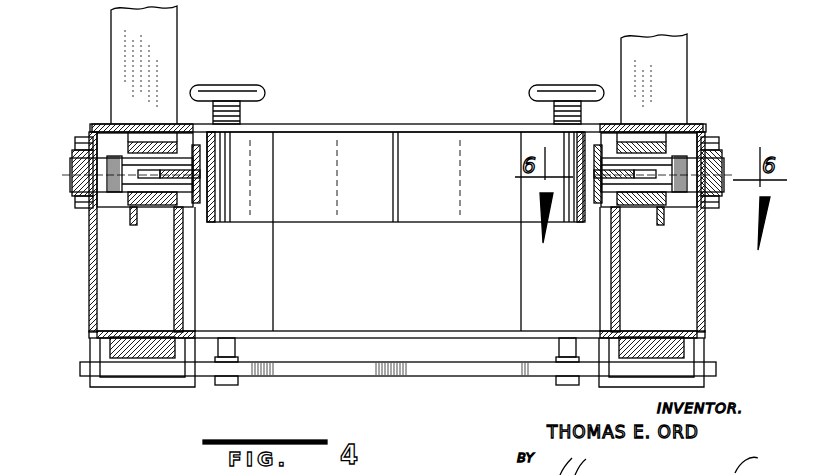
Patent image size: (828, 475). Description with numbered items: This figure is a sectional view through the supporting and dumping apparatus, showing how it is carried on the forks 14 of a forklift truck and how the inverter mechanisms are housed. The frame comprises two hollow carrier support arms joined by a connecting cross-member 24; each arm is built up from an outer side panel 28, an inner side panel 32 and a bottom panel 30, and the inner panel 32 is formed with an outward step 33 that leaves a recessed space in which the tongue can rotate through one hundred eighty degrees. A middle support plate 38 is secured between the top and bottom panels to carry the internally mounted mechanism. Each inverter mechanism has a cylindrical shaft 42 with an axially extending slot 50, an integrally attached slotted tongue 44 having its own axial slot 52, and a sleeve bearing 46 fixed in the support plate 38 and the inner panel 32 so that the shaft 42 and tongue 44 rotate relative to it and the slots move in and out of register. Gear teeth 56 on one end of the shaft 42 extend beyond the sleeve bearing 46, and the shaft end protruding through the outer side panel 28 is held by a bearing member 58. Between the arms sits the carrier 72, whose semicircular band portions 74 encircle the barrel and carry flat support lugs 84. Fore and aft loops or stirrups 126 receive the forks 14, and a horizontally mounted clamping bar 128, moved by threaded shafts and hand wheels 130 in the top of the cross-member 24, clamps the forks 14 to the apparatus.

The forks 14 is at (167, 43).
The connecting cross-member 24 is at (378, 126).
The outer side panel 28 is at (90, 281).
The bottom panel 30 is at (120, 331).
The inner side panel 32 is at (184, 276).
The outward step 33 is at (195, 302).
The middle support plate 38 is at (135, 212).
The cylindrical shaft 42 is at (120, 153).
The slotted tongue 44 is at (192, 143).
The sleeve bearing 46 is at (175, 207).
The axially extending slot 50 is at (148, 176).
The axially extending slot 52 is at (198, 178).
The gear teeth 56 is at (110, 193).
The bearing member 58 is at (83, 138).
The carrier 72 is at (421, 226).
The semicircular band portion 74 is at (396, 177).
The flat support lug 84 is at (190, 178).
The loops or stirrups 126 is at (116, 388).
The clamping bar 128 is at (400, 378).
The knob 130 is at (252, 86).